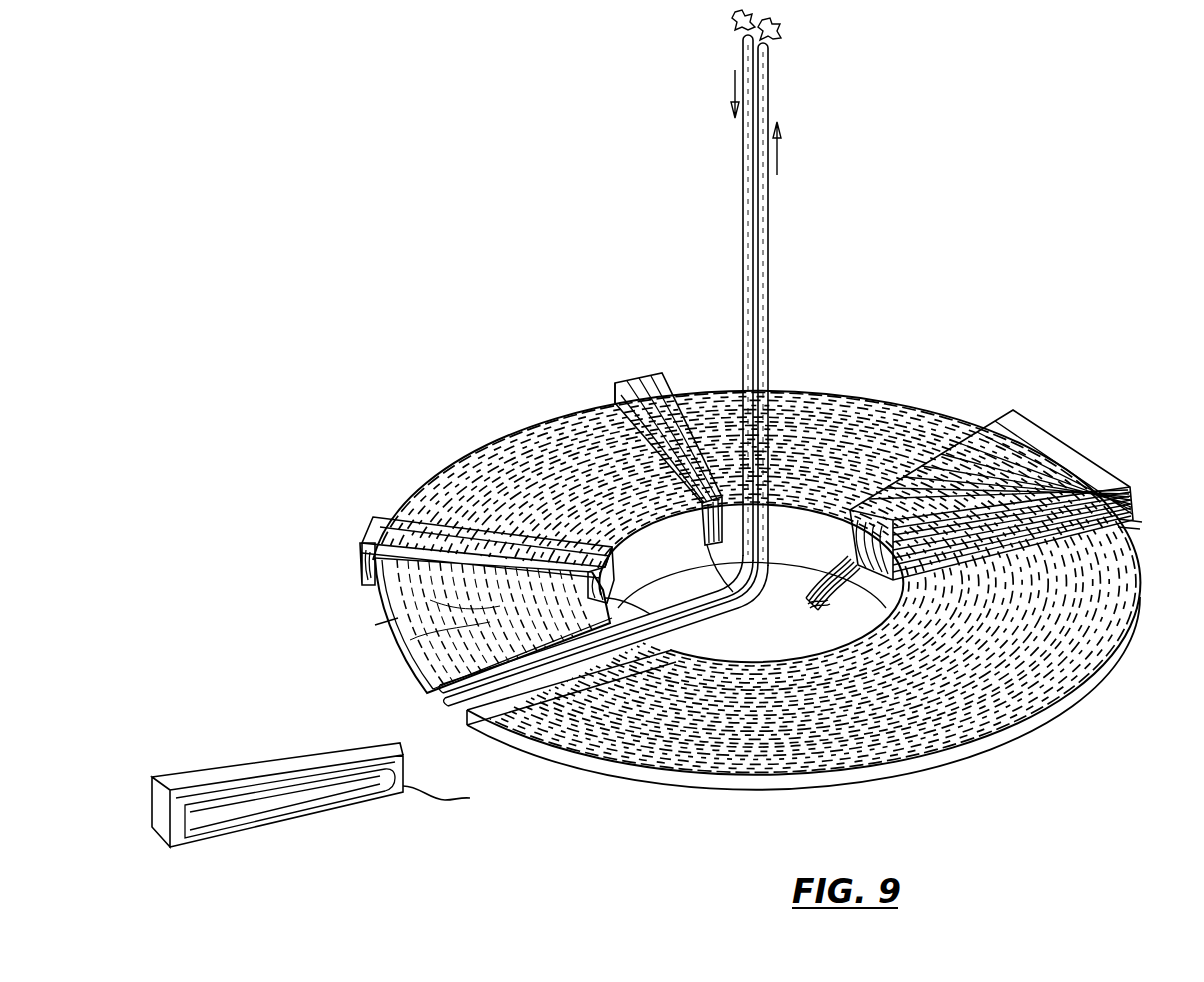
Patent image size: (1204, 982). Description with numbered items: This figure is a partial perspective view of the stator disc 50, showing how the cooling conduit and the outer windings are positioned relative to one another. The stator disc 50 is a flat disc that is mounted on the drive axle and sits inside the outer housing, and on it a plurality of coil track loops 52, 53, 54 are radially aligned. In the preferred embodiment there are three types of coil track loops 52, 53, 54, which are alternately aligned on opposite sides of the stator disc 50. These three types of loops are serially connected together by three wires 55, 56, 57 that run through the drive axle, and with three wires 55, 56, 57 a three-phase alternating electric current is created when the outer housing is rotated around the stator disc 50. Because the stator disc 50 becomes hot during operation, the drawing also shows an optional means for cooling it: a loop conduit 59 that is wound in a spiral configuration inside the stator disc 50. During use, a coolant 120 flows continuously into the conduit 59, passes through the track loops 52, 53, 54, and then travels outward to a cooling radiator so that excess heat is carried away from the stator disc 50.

The stator disc 50 is at (488, 404).
The coil track loop 52 is at (1023, 408).
The coil track loop 53 is at (647, 378).
The coil track loop 54 is at (368, 527).
The wire 55 is at (836, 570).
The wire 56 is at (764, 622).
The wire 57 is at (807, 606).
The loop conduit 59 is at (752, 230).
The coolant 120 is at (733, 25).